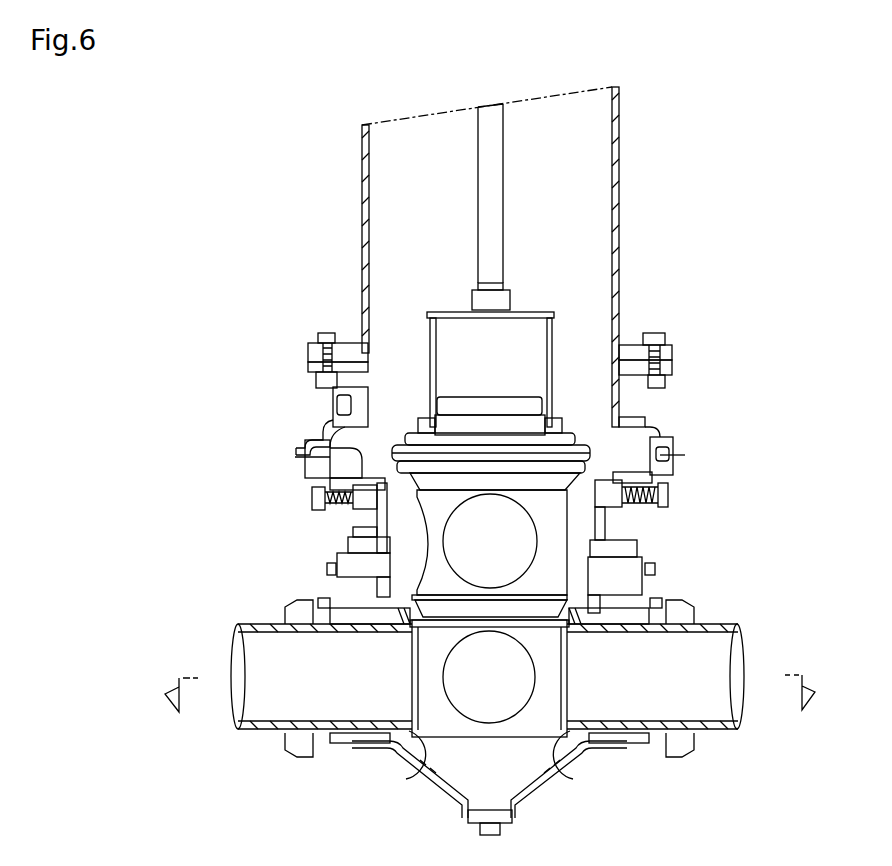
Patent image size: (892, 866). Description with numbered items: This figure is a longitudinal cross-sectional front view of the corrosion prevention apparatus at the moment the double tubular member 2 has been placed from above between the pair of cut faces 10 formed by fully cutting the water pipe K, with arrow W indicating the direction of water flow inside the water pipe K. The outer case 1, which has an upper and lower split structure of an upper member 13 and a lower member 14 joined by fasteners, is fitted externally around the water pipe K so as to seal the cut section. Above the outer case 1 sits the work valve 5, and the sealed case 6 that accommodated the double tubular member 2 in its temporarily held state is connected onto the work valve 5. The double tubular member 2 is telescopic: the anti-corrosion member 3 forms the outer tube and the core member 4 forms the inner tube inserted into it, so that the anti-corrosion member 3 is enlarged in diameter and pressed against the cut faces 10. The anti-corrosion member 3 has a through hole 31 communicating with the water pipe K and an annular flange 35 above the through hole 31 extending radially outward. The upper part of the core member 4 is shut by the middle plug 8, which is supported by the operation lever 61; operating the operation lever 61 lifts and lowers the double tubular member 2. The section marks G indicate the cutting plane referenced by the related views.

The outer case 1 is at (424, 783).
The double tubular member 2 is at (401, 533).
The anti-corrosion member 3 is at (573, 677).
The core member 4 is at (606, 516).
The work valve 5 is at (312, 477).
The sealed case 6 is at (362, 239).
The middle plug 8 is at (582, 436).
The cut faces 10 is at (410, 777).
The upper member 13 is at (625, 606).
The lower member 14 is at (565, 785).
The through hole 31 is at (402, 666).
The flange 35 is at (393, 602).
The operation lever 61 is at (483, 132).
The water pipe K is at (256, 737).
The water flow direction W is at (352, 682).
The section line G is at (489, 693).